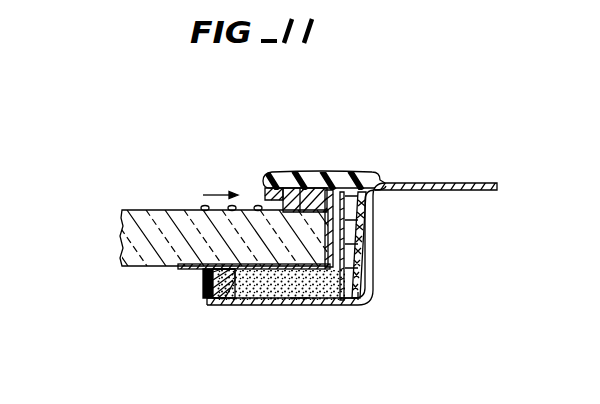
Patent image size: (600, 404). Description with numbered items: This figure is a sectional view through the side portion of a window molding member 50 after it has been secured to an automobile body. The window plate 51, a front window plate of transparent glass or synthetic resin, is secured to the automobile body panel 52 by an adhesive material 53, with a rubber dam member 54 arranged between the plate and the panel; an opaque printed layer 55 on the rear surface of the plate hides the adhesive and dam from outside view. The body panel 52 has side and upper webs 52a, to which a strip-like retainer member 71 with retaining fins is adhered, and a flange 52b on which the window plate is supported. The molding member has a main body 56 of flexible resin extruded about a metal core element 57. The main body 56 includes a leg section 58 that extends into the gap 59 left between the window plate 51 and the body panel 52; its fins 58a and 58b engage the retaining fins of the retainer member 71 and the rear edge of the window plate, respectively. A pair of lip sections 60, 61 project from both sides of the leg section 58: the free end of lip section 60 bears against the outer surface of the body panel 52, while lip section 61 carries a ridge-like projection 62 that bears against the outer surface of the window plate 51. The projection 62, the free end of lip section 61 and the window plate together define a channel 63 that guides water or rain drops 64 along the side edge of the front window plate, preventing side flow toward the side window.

The window molding member 50 is at (335, 172).
The window plate 51 is at (122, 222).
The automobile body panel 52 is at (458, 182).
The side and upper webs 52a is at (376, 228).
The flange 52b is at (258, 303).
The adhesive material 53 is at (232, 294).
The rubber dam member 54 is at (205, 286).
The opaque printed layer 55 is at (178, 272).
The main body 56 is at (316, 172).
The core element 57 is at (323, 306).
The leg section 58 is at (352, 306).
The fin 58a is at (374, 290).
The fin 58b is at (297, 306).
The gap 59 is at (377, 213).
The lip section 60 is at (385, 183).
The lip section 61 is at (268, 180).
The projection 62 is at (293, 172).
The channel 63 is at (262, 198).
The water or rain drops 64 is at (200, 206).
The retainer member 71 is at (370, 262).